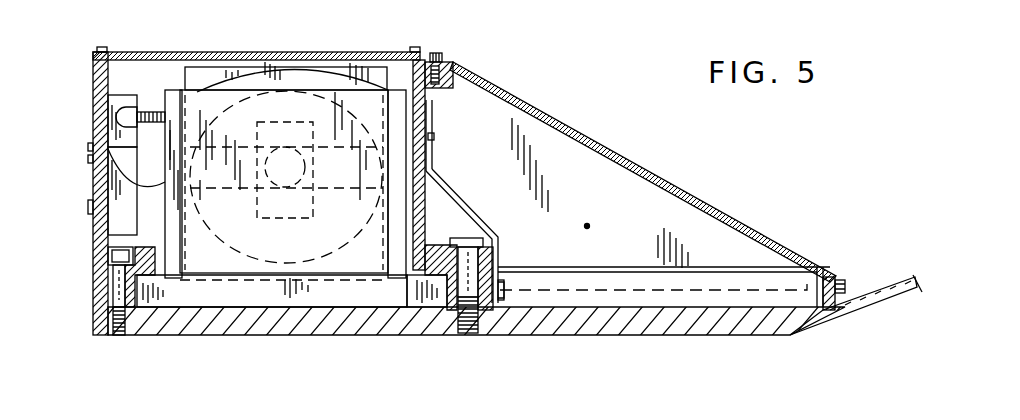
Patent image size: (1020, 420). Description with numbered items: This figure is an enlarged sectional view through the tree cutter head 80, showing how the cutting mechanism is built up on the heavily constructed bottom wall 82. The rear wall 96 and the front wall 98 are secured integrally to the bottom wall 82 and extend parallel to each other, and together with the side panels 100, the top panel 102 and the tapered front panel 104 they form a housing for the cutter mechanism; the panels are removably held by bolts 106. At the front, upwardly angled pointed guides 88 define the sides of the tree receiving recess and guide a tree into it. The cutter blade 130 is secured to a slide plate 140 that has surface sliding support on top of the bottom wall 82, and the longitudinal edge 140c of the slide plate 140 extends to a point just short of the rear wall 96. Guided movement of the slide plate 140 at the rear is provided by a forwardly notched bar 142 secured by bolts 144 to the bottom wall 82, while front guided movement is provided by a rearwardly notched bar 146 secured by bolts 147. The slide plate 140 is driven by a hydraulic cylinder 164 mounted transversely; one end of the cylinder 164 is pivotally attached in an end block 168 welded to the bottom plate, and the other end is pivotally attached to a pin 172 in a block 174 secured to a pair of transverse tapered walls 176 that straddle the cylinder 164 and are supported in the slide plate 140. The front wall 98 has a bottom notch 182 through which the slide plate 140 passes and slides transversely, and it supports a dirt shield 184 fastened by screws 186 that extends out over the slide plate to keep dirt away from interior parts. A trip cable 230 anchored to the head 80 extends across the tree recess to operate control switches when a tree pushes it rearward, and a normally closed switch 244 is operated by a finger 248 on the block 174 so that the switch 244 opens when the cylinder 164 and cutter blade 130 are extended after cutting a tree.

The tree cutter head 80 is at (679, 160).
The bottom wall 82 is at (305, 335).
The pointed guide 88 is at (897, 283).
The rear wall 96 is at (93, 97).
The front wall 98 is at (432, 120).
The side panel 100 is at (593, 157).
The top panel 102 is at (330, 50).
The front panel 104 is at (523, 97).
The bolt 106 is at (103, 47).
The cutter blade 130 is at (725, 288).
The slide plate 140 is at (405, 300).
The longitudinal edge 140c is at (228, 297).
The forwardly notched bar 142 is at (107, 287).
The bolt 144 is at (108, 322).
The rearwardly notched bar 146 is at (490, 258).
The bolt 147 is at (468, 337).
The hydraulic cylinder 164 is at (240, 80).
The end block 168 is at (372, 70).
The pin 172 is at (328, 190).
The block 174 is at (197, 92).
The transverse tapered wall 176 is at (125, 180).
The bottom notch 182 is at (420, 280).
The dirt shield 184 is at (457, 195).
The screw 186 is at (434, 138).
The trip cable 230 is at (590, 226).
The normally closed switch 244 is at (110, 133).
The finger 248 is at (150, 110).